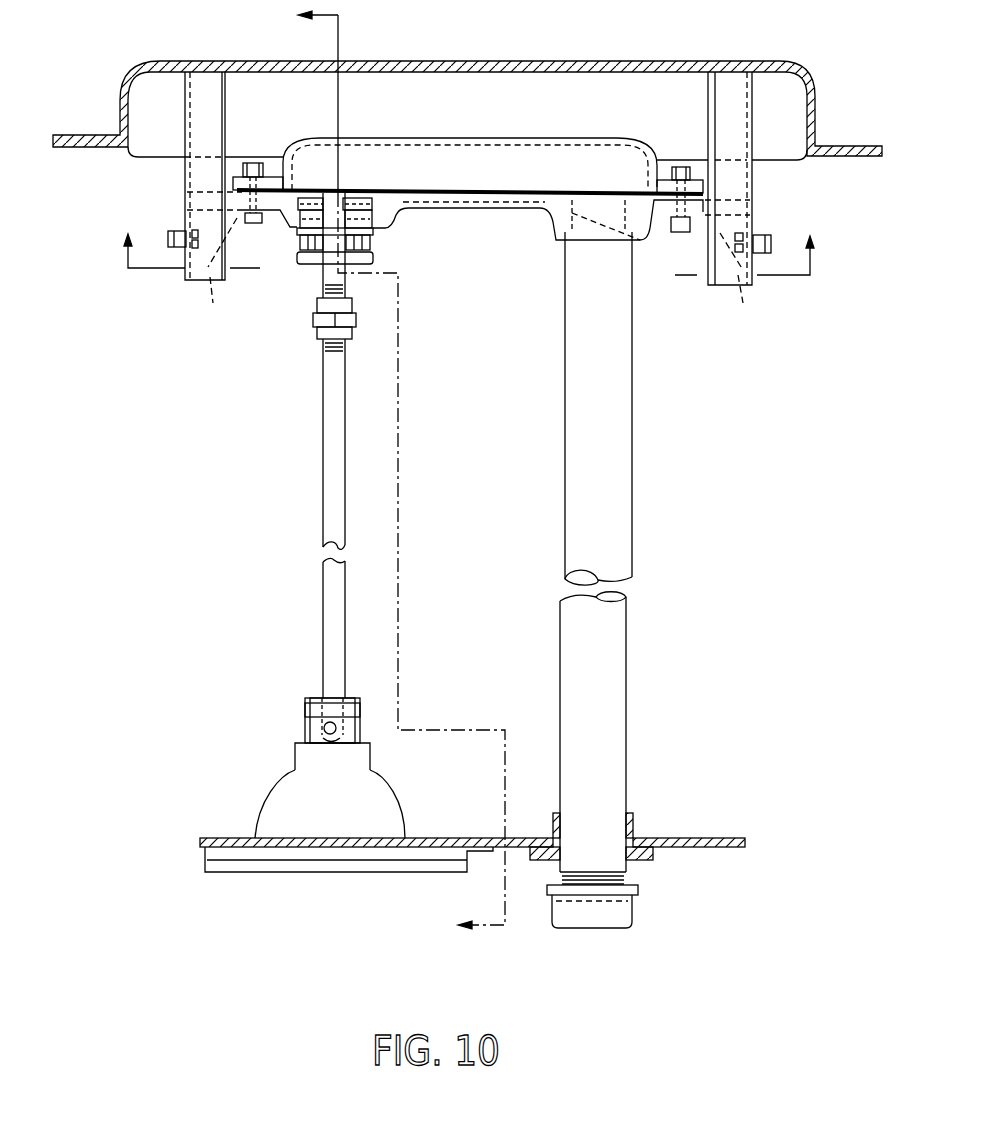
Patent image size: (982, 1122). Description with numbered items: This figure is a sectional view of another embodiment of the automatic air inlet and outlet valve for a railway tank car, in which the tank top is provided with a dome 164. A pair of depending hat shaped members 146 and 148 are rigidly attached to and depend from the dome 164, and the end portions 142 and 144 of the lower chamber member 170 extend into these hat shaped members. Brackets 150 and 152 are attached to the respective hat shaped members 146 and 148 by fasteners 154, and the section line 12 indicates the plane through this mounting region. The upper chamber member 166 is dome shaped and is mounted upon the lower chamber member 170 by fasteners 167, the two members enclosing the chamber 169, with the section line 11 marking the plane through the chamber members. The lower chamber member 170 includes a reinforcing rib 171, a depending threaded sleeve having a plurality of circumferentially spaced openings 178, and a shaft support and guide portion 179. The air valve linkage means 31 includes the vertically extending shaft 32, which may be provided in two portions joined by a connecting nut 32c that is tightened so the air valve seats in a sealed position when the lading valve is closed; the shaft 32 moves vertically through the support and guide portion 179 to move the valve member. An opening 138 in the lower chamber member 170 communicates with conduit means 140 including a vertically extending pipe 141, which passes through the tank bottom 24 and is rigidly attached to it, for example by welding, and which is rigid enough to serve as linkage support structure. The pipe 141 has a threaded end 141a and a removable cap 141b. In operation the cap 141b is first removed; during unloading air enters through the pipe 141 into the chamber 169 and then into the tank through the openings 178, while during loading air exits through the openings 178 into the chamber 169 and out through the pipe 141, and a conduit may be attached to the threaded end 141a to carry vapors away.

The section line 11- 11 is at (386, 471).
The section line 12- 12 is at (466, 240).
The tank bottom 24 is at (697, 838).
The air valve linkage means 31 is at (312, 517).
The vertically extending shaft 32 is at (335, 437).
The connecting nut 32c is at (317, 320).
The opening 138 is at (640, 240).
The conduit means 140 is at (645, 379).
The vertically extending pipe 141 is at (603, 520).
The threaded end 141a is at (621, 881).
The removable cap 141b is at (604, 917).
The end portion 142 is at (737, 207).
The end portion 144 is at (203, 203).
The depending hat shaped member 146 is at (737, 122).
The depending hat shaped member 148 is at (197, 108).
The bracket 150 is at (748, 282).
The bracket 152 is at (215, 276).
The fasteners 154 is at (173, 250).
The dome 164 is at (515, 60).
The upper chamber member 166 is at (530, 160).
The fasteners 167 is at (698, 163).
The chamber 169 is at (470, 164).
The lower chamber member 170 is at (480, 196).
The reinforcing rib 171 is at (520, 208).
The openings 178 is at (370, 241).
The shaft support and guide portion 179 is at (313, 255).